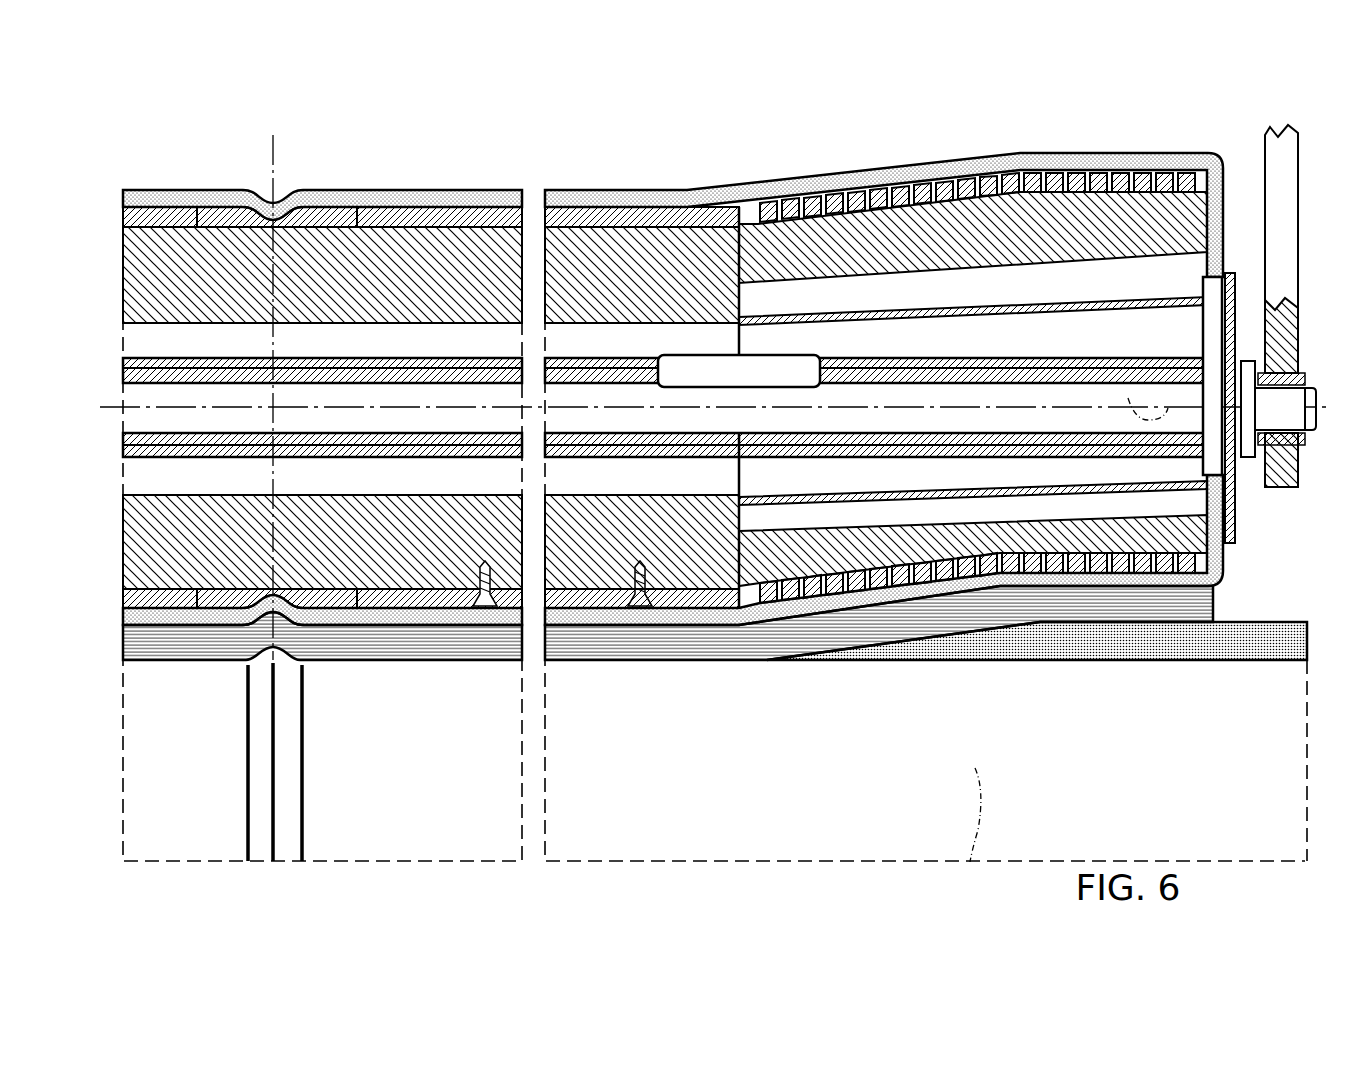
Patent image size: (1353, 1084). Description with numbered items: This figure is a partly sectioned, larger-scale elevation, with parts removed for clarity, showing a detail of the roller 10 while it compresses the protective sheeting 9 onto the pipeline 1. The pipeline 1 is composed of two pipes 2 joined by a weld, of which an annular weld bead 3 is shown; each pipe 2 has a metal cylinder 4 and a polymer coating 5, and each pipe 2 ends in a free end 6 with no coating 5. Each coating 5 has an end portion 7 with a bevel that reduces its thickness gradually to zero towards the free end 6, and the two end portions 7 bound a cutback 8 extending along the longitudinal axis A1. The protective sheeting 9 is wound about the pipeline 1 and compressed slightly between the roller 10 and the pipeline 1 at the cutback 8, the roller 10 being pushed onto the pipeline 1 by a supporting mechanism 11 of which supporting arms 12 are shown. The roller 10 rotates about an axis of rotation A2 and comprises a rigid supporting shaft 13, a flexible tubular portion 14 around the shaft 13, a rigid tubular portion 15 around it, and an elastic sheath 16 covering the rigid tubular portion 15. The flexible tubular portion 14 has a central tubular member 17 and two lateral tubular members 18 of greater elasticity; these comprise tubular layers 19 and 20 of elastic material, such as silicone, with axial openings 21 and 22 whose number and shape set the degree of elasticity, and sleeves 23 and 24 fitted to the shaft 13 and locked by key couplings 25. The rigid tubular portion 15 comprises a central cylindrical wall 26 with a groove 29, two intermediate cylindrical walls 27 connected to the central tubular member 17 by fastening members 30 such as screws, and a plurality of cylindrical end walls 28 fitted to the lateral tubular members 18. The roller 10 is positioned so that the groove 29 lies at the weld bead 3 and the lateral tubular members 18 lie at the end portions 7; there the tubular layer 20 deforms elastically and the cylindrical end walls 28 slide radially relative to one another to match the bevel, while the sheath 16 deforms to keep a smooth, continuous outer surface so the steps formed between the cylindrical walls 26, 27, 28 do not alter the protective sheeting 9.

The pipeline 1 is at (860, 870).
The pipe 2 is at (176, 868).
The annular weld bead 3 is at (285, 703).
The metal cylinder 4 is at (1268, 700).
The coating 5 is at (1247, 637).
The free end 6 is at (206, 746).
The end portion 7 is at (1060, 583).
The cutback 8 is at (386, 600).
The protective sheeting 9 is at (1215, 607).
The roller 10 is at (200, 163).
The supporting mechanism 11 is at (1264, 511).
The supporting arm 12 is at (1276, 210).
The rigid supporting shaft 13 is at (1068, 393).
The flexible tubular portion 14 is at (1218, 285).
The rigid tubular portion 15 is at (1212, 170).
The elastic sheath 16 is at (1150, 585).
The central tubular member 17 is at (475, 200).
The lateral tubular member 18 is at (728, 548).
The tubular layer 19 is at (392, 258).
The tubular layer 20 is at (893, 233).
The axial opening 21 is at (659, 333).
The axial opening 22 is at (737, 285).
The sleeve 23 is at (300, 372).
The sleeve 24 is at (905, 448).
The key coupling 25 is at (796, 364).
The central cylindrical wall 26 is at (324, 214).
The intermediate cylindrical wall 27 is at (568, 207).
The cylindrical end wall 28 is at (766, 210).
The groove 29 is at (300, 668).
The fastening member 30 is at (485, 609).
The longitudinal axis A1 is at (960, 805).
The axis of rotation A2 is at (1133, 399).